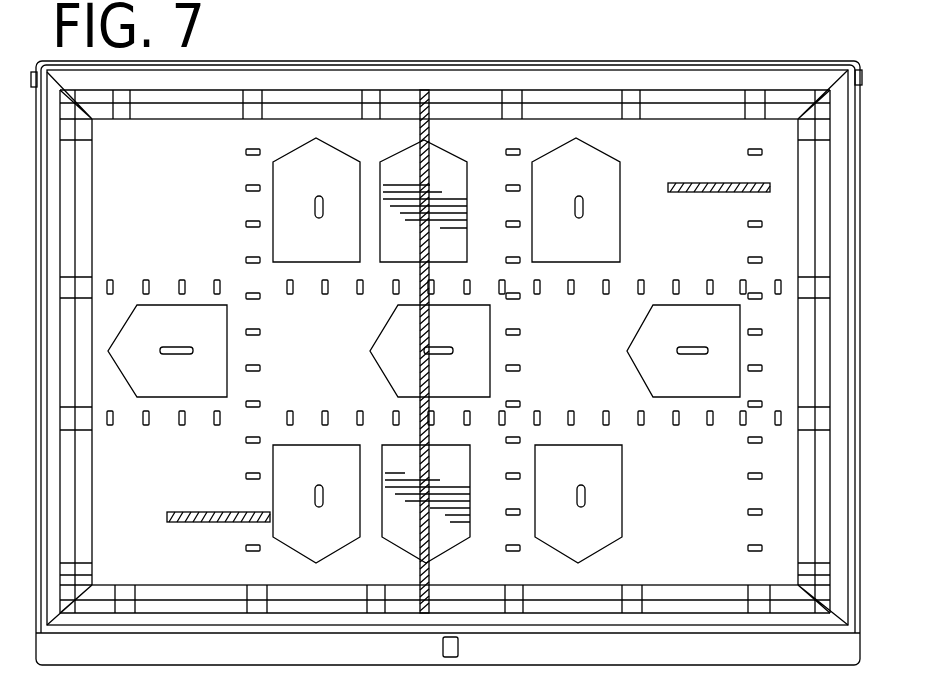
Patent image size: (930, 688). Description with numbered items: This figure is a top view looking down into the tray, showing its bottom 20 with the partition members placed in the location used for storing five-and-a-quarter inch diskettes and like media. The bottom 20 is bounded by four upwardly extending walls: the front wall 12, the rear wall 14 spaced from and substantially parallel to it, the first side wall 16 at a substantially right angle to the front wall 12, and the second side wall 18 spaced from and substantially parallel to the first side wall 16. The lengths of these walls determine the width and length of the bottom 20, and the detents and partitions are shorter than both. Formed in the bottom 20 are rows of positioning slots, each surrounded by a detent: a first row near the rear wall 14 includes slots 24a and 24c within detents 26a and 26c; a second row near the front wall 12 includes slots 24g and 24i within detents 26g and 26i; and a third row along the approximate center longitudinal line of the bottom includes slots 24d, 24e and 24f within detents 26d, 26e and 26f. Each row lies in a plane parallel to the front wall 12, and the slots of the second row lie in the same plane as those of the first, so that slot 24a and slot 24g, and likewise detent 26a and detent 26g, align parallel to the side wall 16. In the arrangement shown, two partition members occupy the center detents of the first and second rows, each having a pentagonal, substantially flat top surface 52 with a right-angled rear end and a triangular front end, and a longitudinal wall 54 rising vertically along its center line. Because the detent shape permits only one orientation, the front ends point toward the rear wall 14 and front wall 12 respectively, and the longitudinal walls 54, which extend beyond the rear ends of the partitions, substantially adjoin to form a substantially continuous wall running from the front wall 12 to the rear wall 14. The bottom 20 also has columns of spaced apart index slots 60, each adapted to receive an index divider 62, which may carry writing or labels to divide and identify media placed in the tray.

The front wall 12 is at (684, 584).
The rear wall 14 is at (158, 121).
The first side wall 16 is at (798, 490).
The second side wall 18 is at (92, 181).
The bottom 20 is at (183, 223).
The positioning slot 24a is at (318, 200).
The positioning slot 24c is at (578, 200).
The positioning slot 24d is at (176, 349).
The positioning slot 24e is at (447, 349).
The positioning slot 24f is at (695, 349).
The positioning slot 24g is at (318, 489).
The positioning slot 24i is at (580, 489).
The detent 26a is at (330, 252).
The detent 26c is at (590, 252).
The detent 26d is at (183, 382).
The detent 26e is at (477, 382).
The detent 26f is at (705, 382).
The detent 26g is at (330, 539).
The detent 26i is at (597, 539).
The top surface 52 is at (415, 182).
The longitudinal wall 54 is at (430, 128).
The index slot 60 is at (147, 281).
The index divider 62 is at (712, 183).